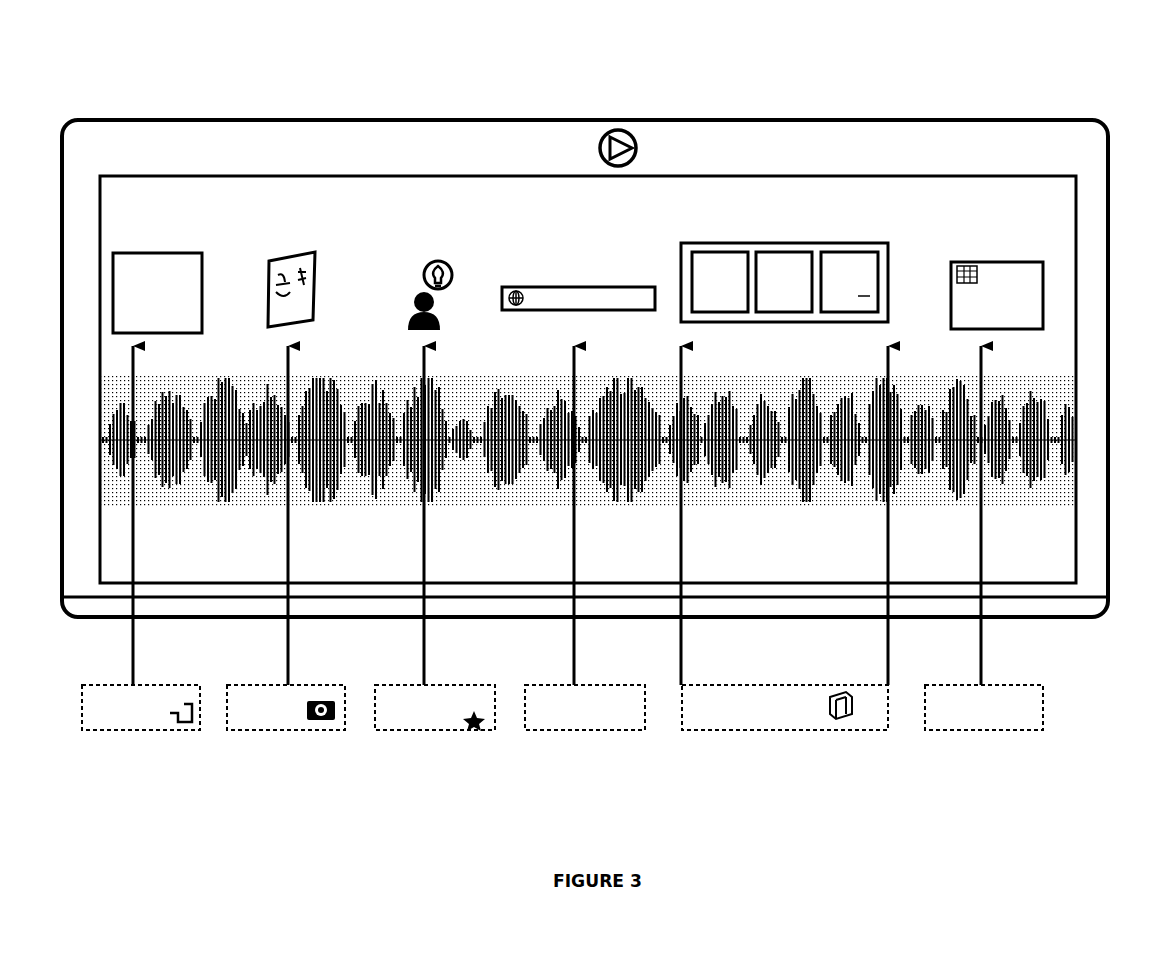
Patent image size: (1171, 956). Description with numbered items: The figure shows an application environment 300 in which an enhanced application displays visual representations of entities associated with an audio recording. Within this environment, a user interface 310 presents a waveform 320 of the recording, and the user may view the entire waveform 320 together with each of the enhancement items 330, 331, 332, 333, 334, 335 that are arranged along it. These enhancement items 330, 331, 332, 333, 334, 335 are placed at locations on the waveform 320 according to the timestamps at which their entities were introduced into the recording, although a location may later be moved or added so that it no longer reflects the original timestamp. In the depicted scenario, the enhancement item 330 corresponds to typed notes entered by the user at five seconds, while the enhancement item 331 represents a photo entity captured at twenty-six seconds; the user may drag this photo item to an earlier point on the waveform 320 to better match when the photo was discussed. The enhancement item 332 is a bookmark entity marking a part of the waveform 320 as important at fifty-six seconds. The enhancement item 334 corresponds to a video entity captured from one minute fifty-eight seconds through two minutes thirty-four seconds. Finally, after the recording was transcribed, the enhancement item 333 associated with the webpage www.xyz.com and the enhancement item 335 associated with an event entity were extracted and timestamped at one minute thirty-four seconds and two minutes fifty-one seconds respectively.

The application environment 300 is at (72, 55).
The user interface 310 is at (866, 118).
The waveform 320 is at (466, 376).
The enhancement item 330 is at (202, 292).
The enhancement item 331 is at (314, 296).
The enhancement item 332 is at (448, 266).
The enhancement item 333 is at (556, 287).
The enhancement item 334 is at (888, 281).
The enhancement item 335 is at (970, 266).